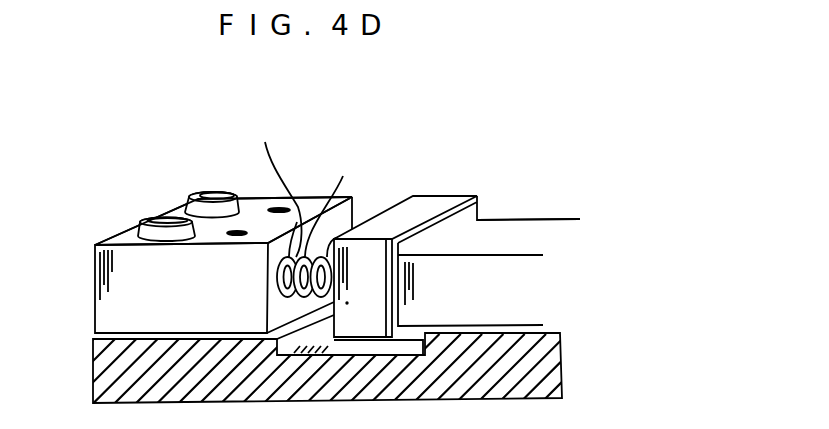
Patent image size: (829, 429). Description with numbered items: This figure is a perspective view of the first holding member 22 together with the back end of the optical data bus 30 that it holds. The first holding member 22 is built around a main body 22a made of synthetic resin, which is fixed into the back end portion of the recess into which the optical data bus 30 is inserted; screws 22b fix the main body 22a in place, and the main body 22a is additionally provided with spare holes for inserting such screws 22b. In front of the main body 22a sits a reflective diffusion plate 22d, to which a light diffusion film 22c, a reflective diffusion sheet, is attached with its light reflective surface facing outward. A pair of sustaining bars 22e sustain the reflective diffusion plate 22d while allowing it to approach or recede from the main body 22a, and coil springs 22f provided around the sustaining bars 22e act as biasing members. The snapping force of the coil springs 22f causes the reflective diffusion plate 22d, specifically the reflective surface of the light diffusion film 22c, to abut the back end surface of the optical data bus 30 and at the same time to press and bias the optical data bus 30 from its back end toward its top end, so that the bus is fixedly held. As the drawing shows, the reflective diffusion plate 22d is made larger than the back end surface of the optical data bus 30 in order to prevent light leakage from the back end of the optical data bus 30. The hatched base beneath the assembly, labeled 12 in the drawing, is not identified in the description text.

The substrate 12 is at (537, 366).
The first holding member 22 is at (216, 153).
The main body 22a is at (120, 243).
The screws 22b is at (133, 175).
The light diffusion film 22c is at (467, 215).
The reflective diffusion plate 22d is at (418, 211).
The sustaining bars 22e is at (333, 222).
The coil springs 22f is at (270, 184).
The optical data bus 30 is at (555, 230).